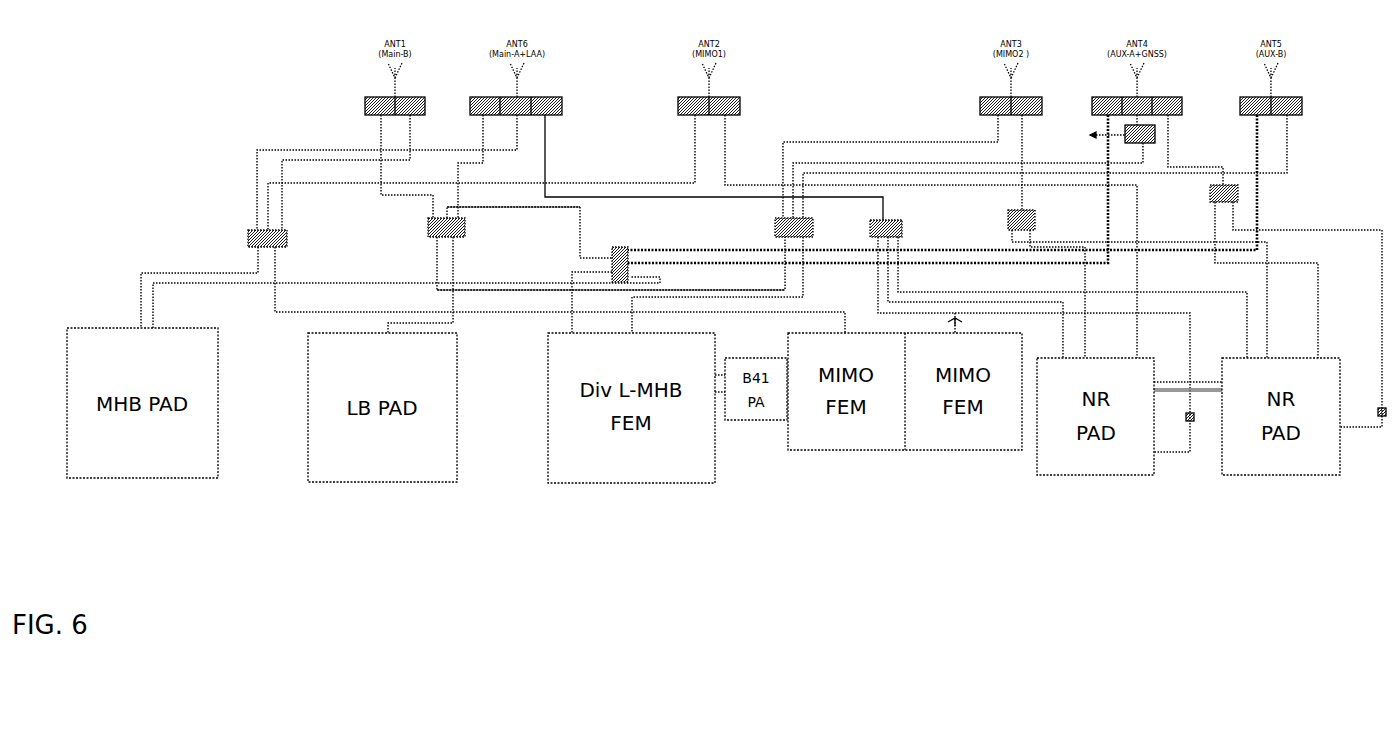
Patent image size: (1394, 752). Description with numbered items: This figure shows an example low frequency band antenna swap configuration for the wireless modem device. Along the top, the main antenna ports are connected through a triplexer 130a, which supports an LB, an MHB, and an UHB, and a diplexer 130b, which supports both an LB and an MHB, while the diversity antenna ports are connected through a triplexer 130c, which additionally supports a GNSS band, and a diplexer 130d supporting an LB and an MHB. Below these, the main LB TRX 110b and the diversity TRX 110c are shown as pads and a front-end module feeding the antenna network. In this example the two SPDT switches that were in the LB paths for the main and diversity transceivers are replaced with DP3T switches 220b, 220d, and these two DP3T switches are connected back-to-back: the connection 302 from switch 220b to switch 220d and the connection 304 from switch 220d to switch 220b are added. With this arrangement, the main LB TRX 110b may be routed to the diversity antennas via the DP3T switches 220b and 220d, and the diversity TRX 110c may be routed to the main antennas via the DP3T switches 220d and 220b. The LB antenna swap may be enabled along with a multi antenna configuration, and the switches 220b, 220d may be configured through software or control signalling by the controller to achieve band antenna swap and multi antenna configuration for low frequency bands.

The triplexer 130a is at (543, 97).
The diplexer 130b is at (376, 97).
The triplexer 130c is at (1162, 97).
The diplexer 130d is at (1286, 97).
The DP3T switch 220b is at (428, 225).
The DP3T switch 220d is at (612, 246).
The connection 302 is at (522, 207).
The connection 304 is at (483, 289).
The main LB TRX 110b is at (378, 483).
The diversity TRX 110c is at (625, 483).